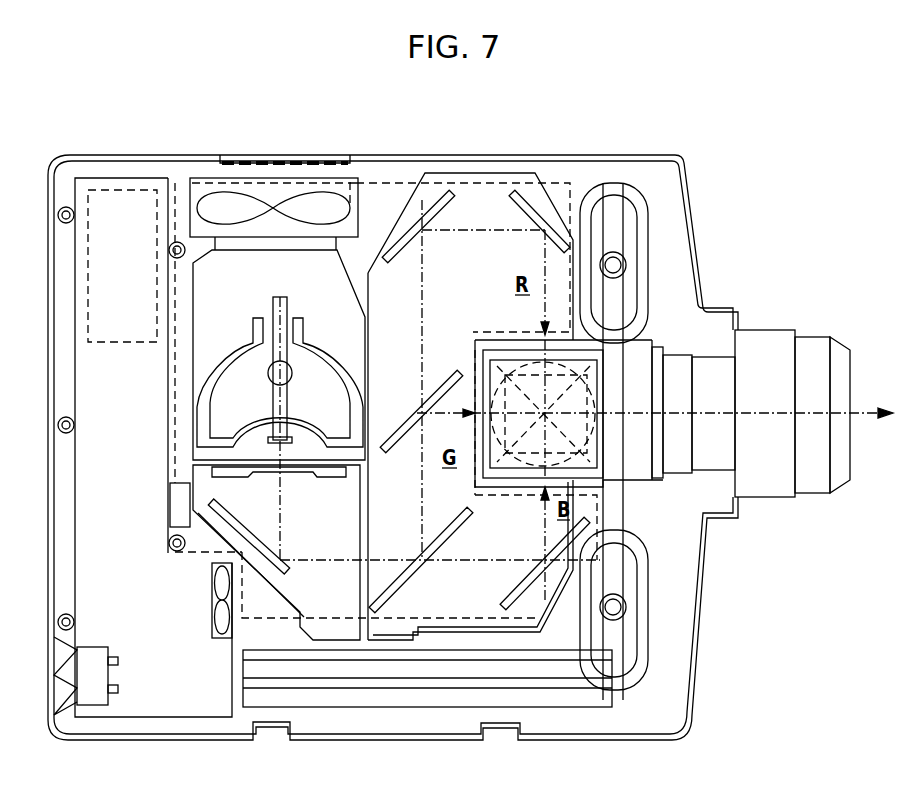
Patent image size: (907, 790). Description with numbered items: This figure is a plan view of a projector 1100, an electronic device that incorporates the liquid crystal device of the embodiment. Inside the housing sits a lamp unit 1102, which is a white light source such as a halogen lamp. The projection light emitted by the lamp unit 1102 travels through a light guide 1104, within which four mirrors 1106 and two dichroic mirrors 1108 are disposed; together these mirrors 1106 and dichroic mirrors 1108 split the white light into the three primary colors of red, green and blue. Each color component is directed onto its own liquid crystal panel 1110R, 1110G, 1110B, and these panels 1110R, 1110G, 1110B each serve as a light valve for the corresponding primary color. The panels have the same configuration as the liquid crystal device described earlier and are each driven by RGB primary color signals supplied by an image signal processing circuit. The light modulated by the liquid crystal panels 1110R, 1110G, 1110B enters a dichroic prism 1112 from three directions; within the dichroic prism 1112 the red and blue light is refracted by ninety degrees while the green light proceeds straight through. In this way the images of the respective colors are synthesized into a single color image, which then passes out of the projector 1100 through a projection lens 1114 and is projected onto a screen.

The projector 1100 is at (704, 159).
The lamp unit 1102 is at (320, 283).
The light guide 1104 is at (428, 172).
The mirrors 1106 is at (523, 210).
The dichroic mirrors 1108 is at (420, 450).
The liquid crystal panel 1110R is at (515, 333).
The liquid crystal panel 1110G is at (483, 383).
The liquid crystal panel 1110B is at (510, 484).
The dichroic prism 1112 is at (653, 484).
The projection lens 1114 is at (823, 342).